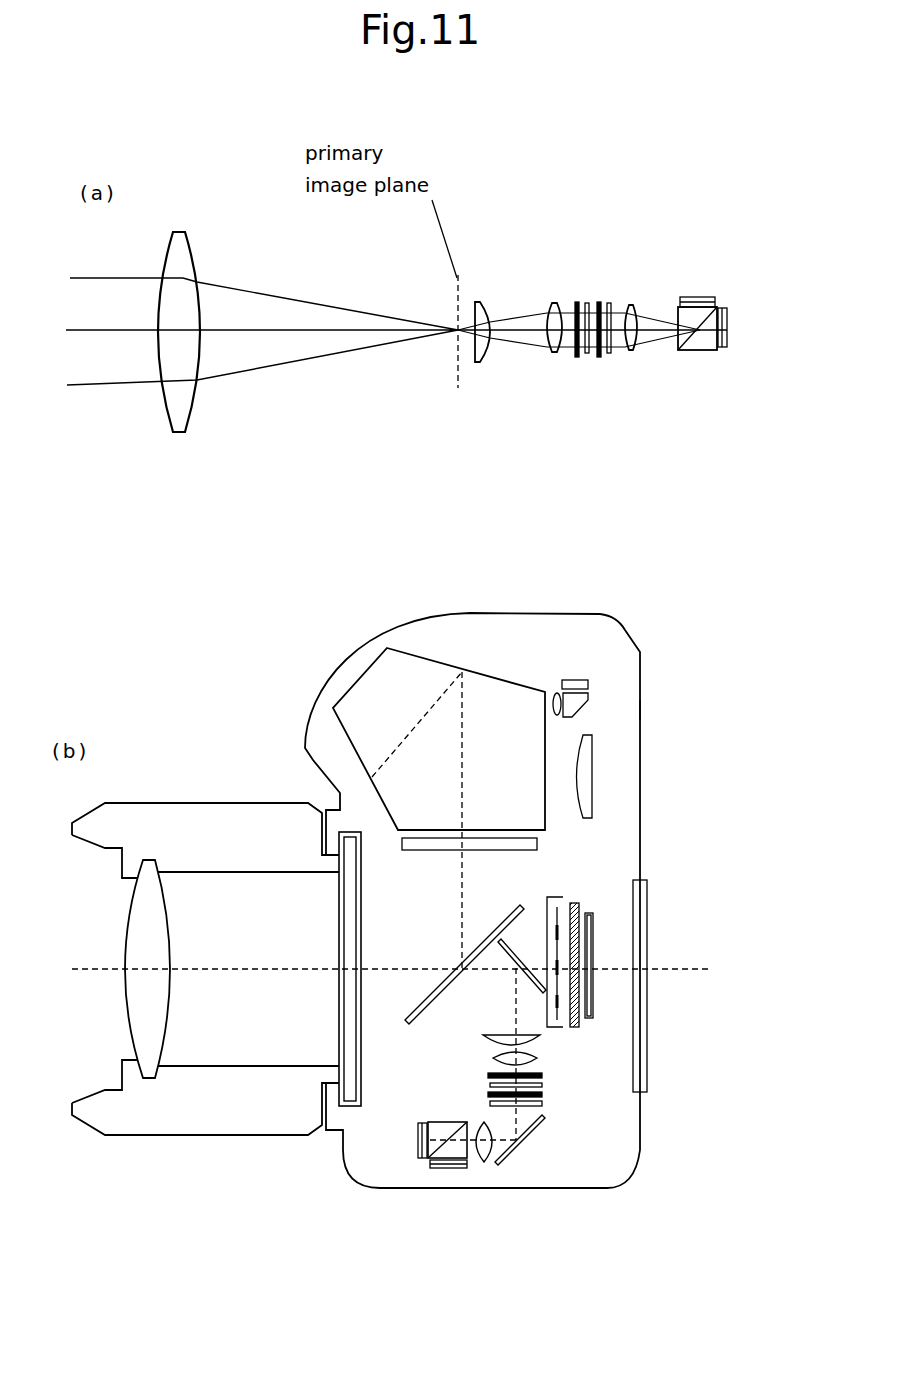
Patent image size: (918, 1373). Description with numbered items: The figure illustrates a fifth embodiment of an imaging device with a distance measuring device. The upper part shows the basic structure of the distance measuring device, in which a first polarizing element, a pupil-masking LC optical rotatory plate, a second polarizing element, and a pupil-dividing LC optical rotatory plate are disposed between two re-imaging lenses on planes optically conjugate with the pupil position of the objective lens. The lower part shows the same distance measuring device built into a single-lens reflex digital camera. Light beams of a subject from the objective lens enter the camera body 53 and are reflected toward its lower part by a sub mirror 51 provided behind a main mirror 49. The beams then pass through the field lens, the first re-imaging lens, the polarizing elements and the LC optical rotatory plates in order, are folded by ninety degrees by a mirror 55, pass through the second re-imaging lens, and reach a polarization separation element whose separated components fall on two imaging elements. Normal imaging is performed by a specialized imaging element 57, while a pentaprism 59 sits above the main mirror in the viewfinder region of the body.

The main mirror 49 is at (423, 1010).
The sub mirror 51 is at (505, 958).
The camera body 53 is at (642, 708).
The mirror 55 is at (528, 1132).
The specialized imaging element 57 is at (593, 913).
The pentaprism 59 is at (498, 702).